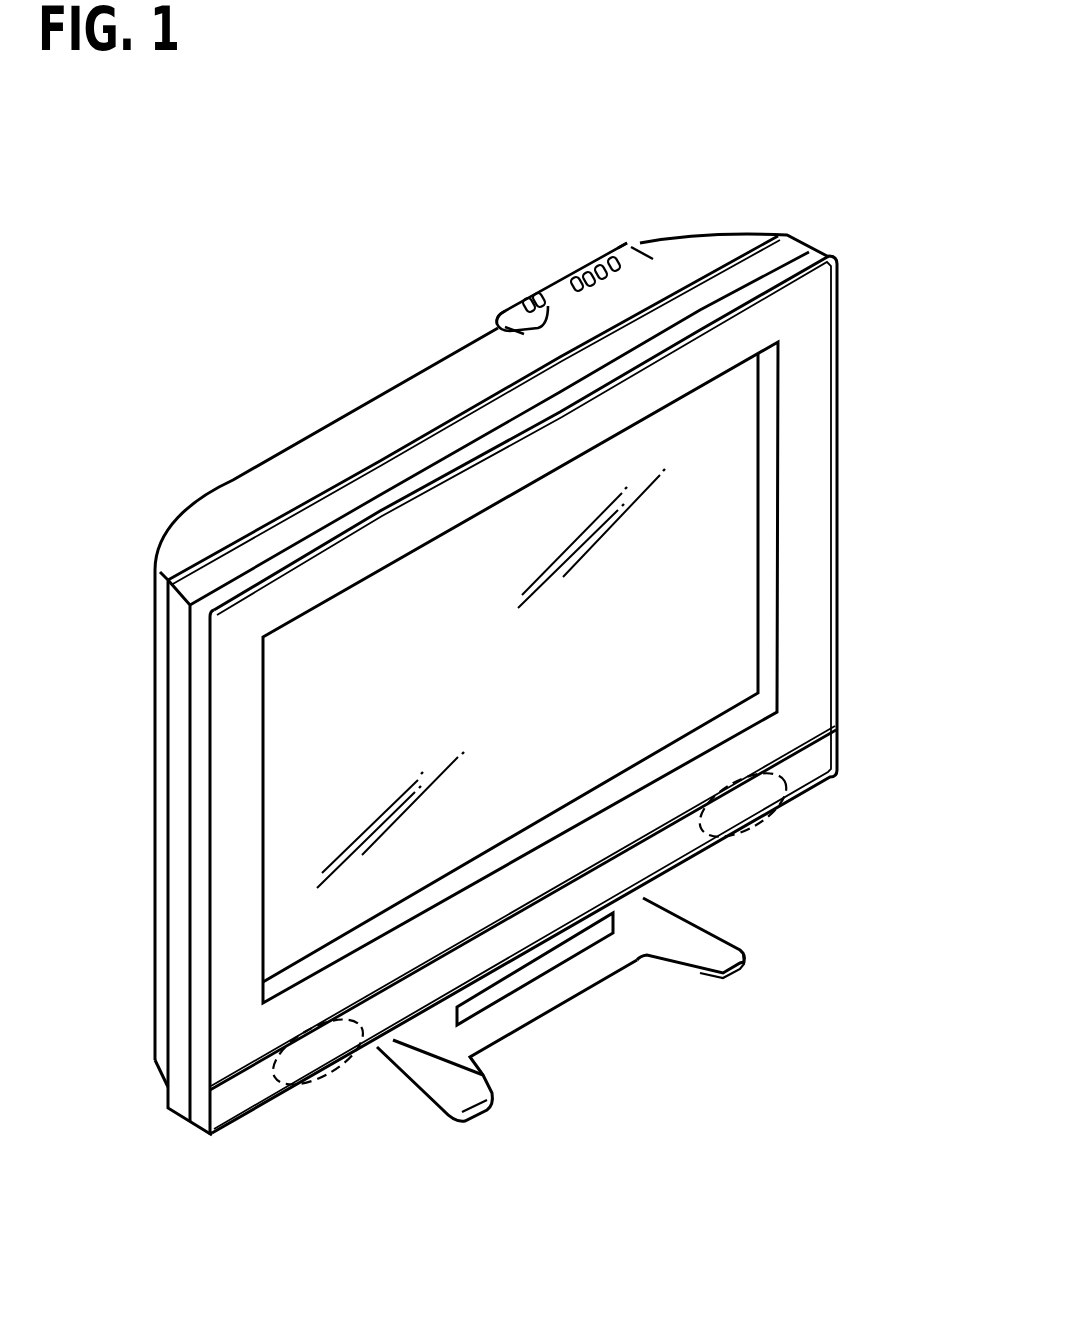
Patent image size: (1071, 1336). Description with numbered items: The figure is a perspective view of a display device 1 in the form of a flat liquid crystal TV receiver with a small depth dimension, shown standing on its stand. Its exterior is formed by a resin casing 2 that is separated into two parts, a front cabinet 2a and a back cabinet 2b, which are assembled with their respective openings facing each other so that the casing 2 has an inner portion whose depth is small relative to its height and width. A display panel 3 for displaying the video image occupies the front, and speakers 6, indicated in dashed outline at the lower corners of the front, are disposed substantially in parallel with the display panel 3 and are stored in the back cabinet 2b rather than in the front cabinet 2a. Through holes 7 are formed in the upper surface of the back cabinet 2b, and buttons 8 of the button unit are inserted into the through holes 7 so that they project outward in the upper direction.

The display device 1 is at (325, 394).
The casing 2 is at (895, 112).
The front cabinet 2a is at (808, 262).
The back cabinet 2b is at (778, 248).
The display panel 3 is at (580, 642).
The speakers 6 is at (780, 815).
The through holes 7 is at (498, 322).
The buttons 8 is at (600, 250).